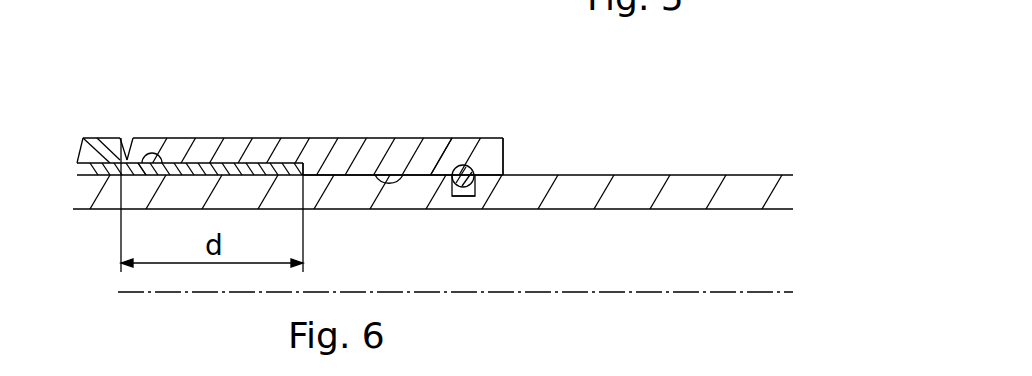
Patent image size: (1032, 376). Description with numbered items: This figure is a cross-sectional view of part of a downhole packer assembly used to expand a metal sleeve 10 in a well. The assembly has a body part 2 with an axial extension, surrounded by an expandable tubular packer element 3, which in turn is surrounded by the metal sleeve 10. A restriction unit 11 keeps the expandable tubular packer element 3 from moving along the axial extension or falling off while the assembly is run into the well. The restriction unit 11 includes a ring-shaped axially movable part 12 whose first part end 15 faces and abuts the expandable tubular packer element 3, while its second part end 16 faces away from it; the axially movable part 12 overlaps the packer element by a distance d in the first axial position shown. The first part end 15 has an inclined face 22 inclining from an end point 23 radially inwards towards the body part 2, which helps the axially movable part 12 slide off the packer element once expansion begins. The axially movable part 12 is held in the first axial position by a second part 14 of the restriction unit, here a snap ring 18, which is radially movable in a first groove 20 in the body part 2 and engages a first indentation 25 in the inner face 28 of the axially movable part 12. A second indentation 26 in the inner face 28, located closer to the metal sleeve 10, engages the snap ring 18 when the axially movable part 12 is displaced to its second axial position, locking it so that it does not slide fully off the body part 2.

The body part 2 is at (690, 175).
The expandable tubular packer element 3 is at (268, 161).
The metal sleeve 10 is at (83, 140).
The restriction unit 11 is at (362, 150).
The axially movable part 12 is at (317, 150).
The second part 14 is at (455, 170).
The first part end 15 is at (145, 150).
The second part end 16 is at (490, 152).
The snap ring 18 is at (465, 166).
The first groove 20 is at (477, 192).
The inclined face 22 is at (114, 158).
The end point 23 is at (117, 160).
The first indentation 25 is at (468, 168).
The second indentation 26 is at (165, 153).
The inner face 28 is at (400, 173).